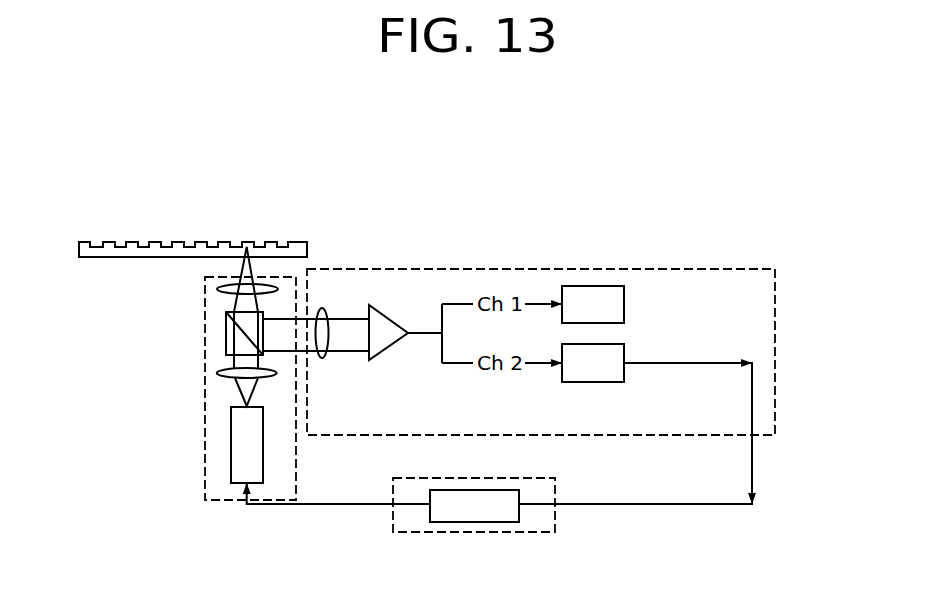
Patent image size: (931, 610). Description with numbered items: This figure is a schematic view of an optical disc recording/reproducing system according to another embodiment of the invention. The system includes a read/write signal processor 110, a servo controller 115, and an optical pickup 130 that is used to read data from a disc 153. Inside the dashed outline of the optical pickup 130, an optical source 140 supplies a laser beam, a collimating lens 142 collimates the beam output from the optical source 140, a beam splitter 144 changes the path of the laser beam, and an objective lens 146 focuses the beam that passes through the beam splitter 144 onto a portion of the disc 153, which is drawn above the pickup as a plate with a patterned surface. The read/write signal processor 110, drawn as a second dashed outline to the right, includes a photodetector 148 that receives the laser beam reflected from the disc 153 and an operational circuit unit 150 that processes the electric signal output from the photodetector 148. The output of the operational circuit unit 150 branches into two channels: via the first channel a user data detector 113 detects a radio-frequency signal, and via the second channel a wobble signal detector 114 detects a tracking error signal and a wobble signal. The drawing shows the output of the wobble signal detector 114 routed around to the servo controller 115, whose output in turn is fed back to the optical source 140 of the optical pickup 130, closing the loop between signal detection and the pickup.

The disc 153 is at (176, 239).
The objective lens 146 is at (217, 289).
The beam splitter 144 is at (226, 331).
The collimating lens 142 is at (217, 373).
The optical source 140 is at (231, 445).
The optical pickup 130 is at (197, 485).
The photodetector 148 is at (330, 308).
The operational circuit unit 150 is at (388, 317).
The read/write signal processor 110 is at (574, 263).
The user data detector 113 is at (593, 304).
The wobble signal detector 114 is at (593, 363).
The servo controller 115 is at (474, 505).